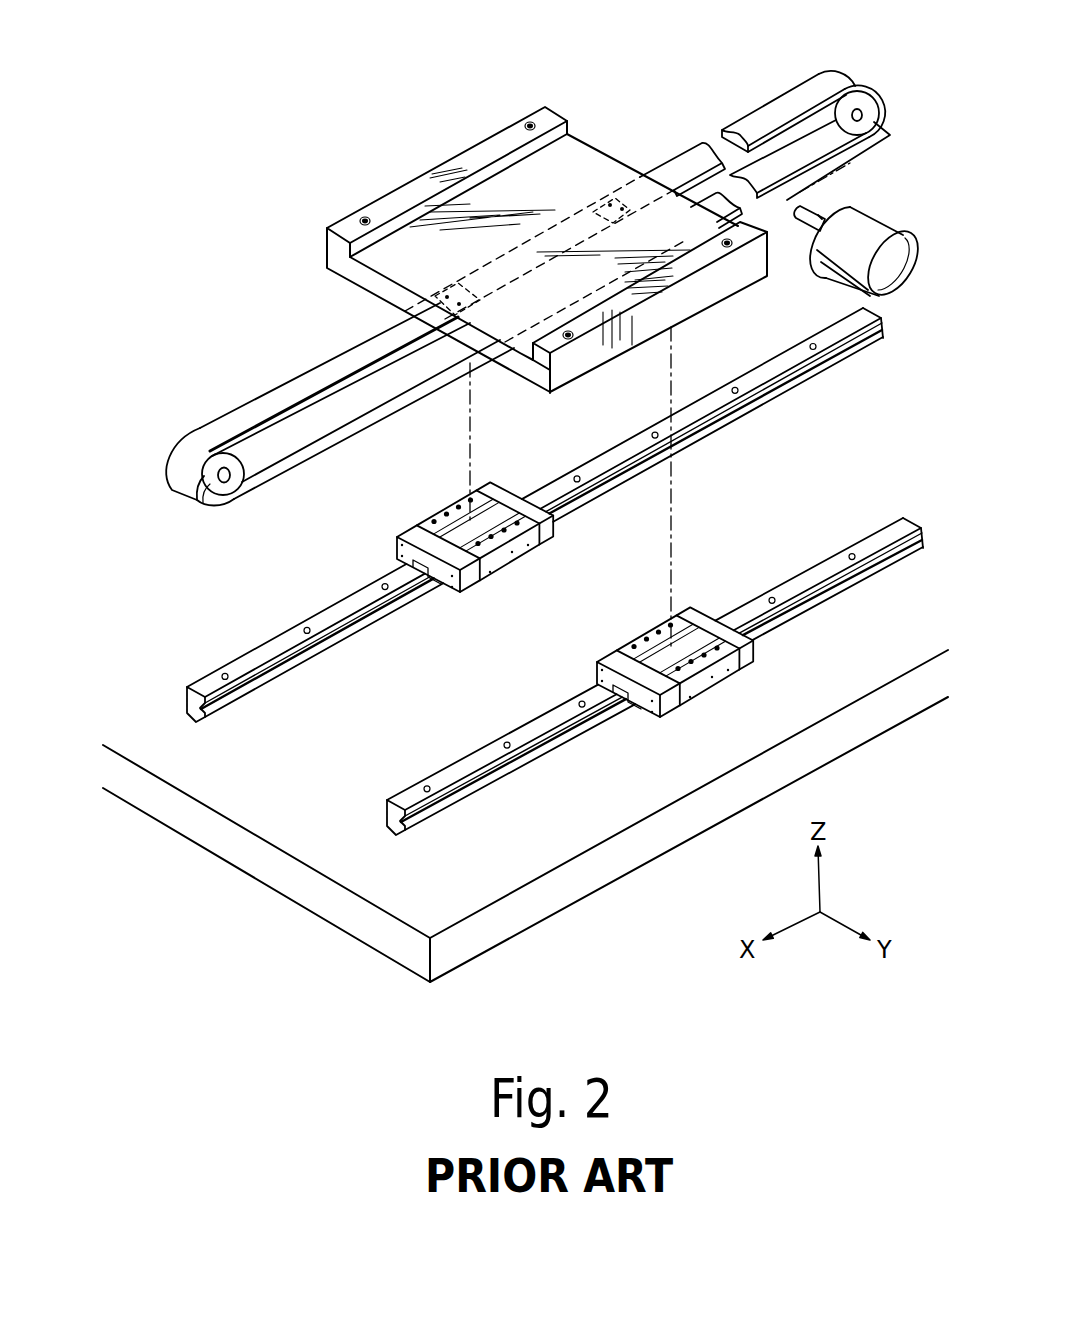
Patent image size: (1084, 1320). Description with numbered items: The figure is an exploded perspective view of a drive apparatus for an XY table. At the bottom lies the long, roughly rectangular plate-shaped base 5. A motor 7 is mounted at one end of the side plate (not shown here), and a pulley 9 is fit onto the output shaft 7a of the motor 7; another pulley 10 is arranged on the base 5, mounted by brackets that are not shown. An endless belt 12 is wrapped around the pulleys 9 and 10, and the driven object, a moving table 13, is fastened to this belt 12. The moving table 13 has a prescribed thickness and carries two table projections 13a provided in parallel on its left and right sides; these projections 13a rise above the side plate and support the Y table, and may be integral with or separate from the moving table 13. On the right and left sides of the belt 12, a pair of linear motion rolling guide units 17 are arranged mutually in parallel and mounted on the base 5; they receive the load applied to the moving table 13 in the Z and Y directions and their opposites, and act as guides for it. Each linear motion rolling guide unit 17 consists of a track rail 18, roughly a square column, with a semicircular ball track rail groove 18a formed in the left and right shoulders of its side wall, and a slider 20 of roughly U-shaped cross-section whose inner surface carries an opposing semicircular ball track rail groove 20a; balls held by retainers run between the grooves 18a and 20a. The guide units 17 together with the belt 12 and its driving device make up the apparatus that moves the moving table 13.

The base 5 is at (552, 895).
The motor 7 is at (860, 240).
The output shaft 7a is at (823, 212).
The pulley 9 is at (863, 87).
The pulley 10 is at (227, 457).
The endless belt 12 is at (758, 120).
The moving table 13 is at (542, 237).
The table projections 13a is at (390, 205).
The linear motion rolling guide unit 17 is at (528, 591).
The track rail 18 is at (208, 683).
The ball track rail groove 18a is at (343, 627).
The slider 20 is at (585, 627).
The ball track rail groove 20a is at (430, 592).